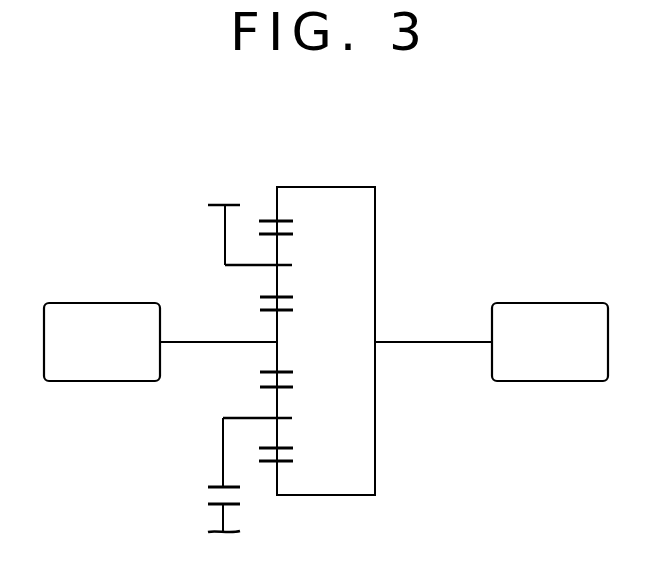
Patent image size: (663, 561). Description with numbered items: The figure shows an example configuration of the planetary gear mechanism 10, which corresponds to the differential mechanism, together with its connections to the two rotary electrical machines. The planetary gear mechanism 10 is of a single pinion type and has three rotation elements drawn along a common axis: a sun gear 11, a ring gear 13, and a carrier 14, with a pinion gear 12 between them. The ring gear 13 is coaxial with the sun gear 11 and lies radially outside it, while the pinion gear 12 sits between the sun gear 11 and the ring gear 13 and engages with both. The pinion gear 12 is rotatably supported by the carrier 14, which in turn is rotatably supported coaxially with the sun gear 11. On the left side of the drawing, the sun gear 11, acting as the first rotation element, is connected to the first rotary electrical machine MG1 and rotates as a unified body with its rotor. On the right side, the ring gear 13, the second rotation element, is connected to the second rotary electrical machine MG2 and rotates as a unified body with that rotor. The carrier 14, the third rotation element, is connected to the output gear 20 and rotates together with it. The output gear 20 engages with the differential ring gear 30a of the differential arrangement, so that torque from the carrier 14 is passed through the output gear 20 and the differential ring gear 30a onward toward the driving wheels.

The planetary gear mechanism 10 is at (338, 154).
The sun gear 11 is at (268, 374).
The pinion gear 12 is at (268, 298).
The ring gear 13 is at (262, 226).
The carrier 14 is at (223, 438).
The output gear 20 is at (215, 487).
The differential ring gear 30a is at (237, 497).
The first rotary electrical machine MG1 is at (102, 302).
The second rotary electrical machine MG2 is at (550, 302).